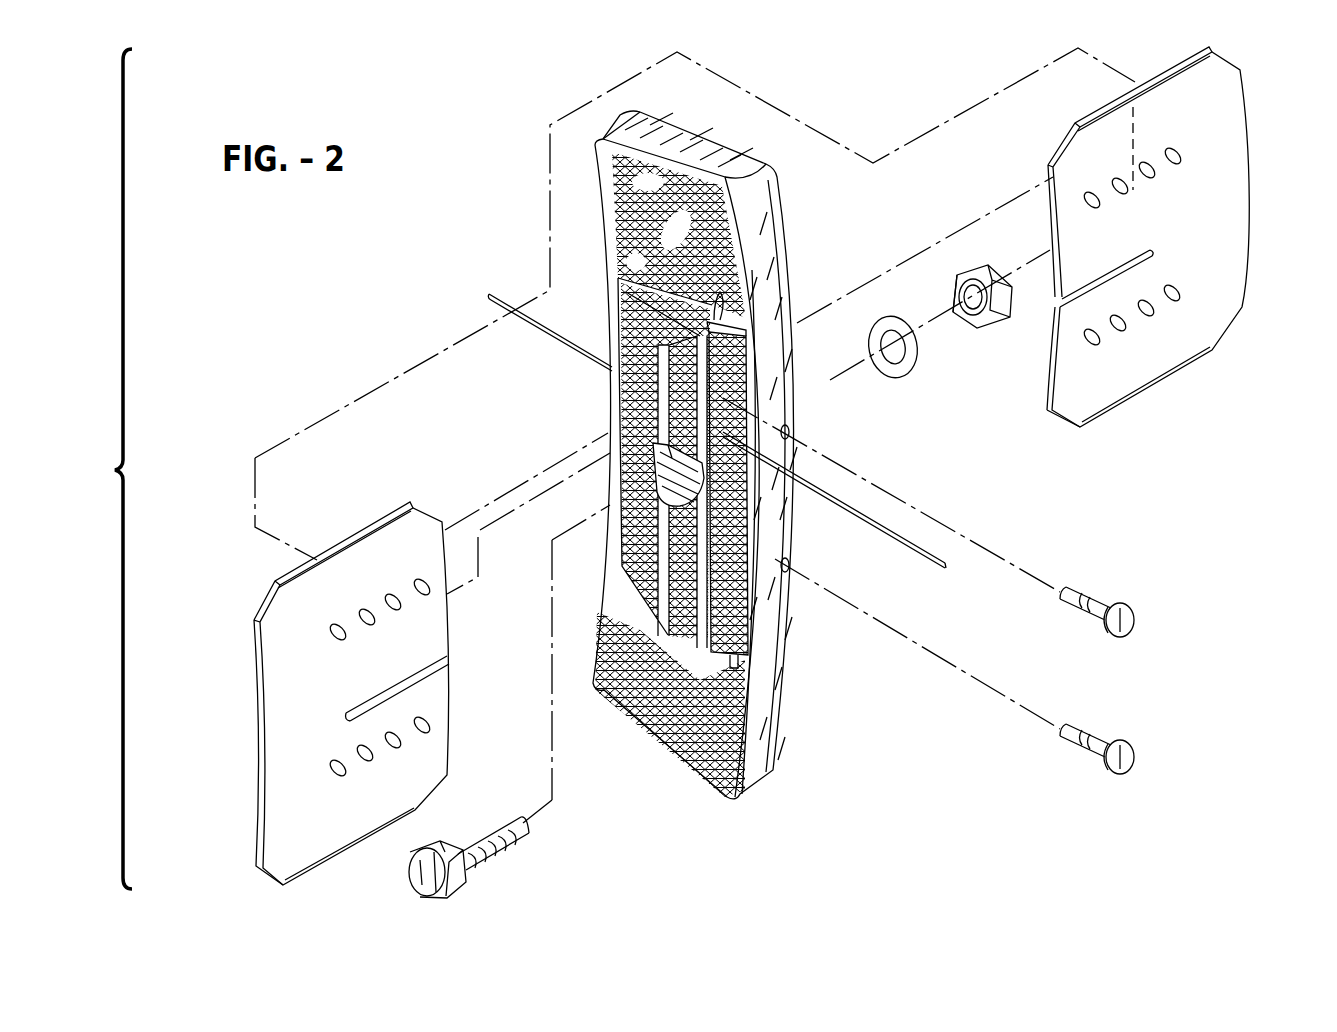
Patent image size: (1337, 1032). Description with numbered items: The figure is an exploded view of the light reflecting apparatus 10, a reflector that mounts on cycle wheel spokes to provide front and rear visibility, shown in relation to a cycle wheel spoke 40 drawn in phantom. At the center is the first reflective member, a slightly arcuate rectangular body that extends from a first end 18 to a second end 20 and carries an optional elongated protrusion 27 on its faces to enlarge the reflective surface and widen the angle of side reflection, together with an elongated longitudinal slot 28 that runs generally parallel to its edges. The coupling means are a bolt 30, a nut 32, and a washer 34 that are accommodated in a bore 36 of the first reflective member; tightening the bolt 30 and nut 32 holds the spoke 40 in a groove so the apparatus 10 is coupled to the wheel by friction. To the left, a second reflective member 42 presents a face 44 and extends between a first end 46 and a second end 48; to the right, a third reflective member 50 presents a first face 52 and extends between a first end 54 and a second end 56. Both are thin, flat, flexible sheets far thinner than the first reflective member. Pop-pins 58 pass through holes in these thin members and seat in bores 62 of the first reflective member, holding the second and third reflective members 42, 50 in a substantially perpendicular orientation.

The light reflecting apparatus 10 is at (102, 469).
The first end 18 is at (700, 454).
The second end 20 is at (672, 765).
The elongated protrusion 27 is at (664, 366).
The elongated longitudinal slot 28 is at (720, 310).
The bolt 30 is at (505, 840).
The nut 32 is at (980, 325).
The washer 34 is at (905, 370).
The bore 36 is at (665, 470).
The cycle wheel spoke 40 is at (487, 292).
The second reflective member 42 is at (319, 691).
The face 44 is at (282, 728).
The first end 46 is at (390, 518).
The second end 48 is at (338, 860).
The third reflective member 50 is at (1177, 231).
The first face 52 is at (1220, 180).
The first end 54 is at (1140, 85).
The second end 56 is at (1145, 390).
The pop-pins 58 is at (1135, 612).
The bores 62 is at (792, 432).